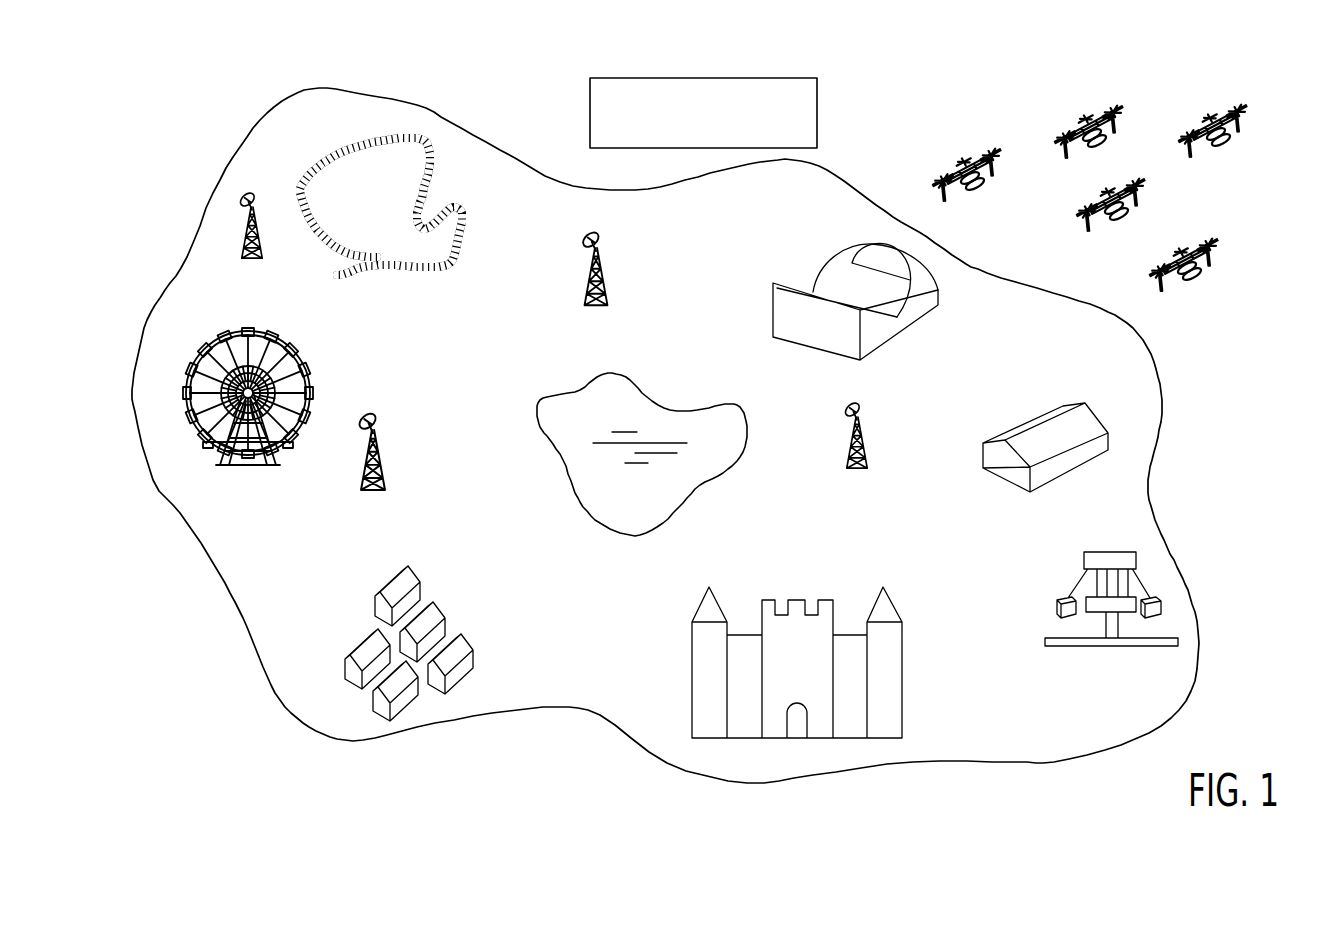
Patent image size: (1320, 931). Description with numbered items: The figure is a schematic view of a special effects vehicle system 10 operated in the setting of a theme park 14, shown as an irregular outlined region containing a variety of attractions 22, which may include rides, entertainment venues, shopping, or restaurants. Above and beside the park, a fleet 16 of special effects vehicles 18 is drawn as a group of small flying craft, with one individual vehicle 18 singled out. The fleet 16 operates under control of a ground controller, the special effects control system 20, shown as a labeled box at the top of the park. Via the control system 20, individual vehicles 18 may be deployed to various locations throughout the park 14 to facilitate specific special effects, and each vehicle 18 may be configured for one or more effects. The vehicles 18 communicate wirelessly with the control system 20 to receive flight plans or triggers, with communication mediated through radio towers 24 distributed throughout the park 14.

The special effects vehicle system 10 is at (200, 132).
The theme park 14 is at (187, 257).
The fleet 16 is at (1104, 264).
The special effects vehicle 18 is at (1205, 240).
The special effects control system 20 is at (817, 110).
The attraction 22 is at (287, 450).
The radio tower 24 is at (607, 272).